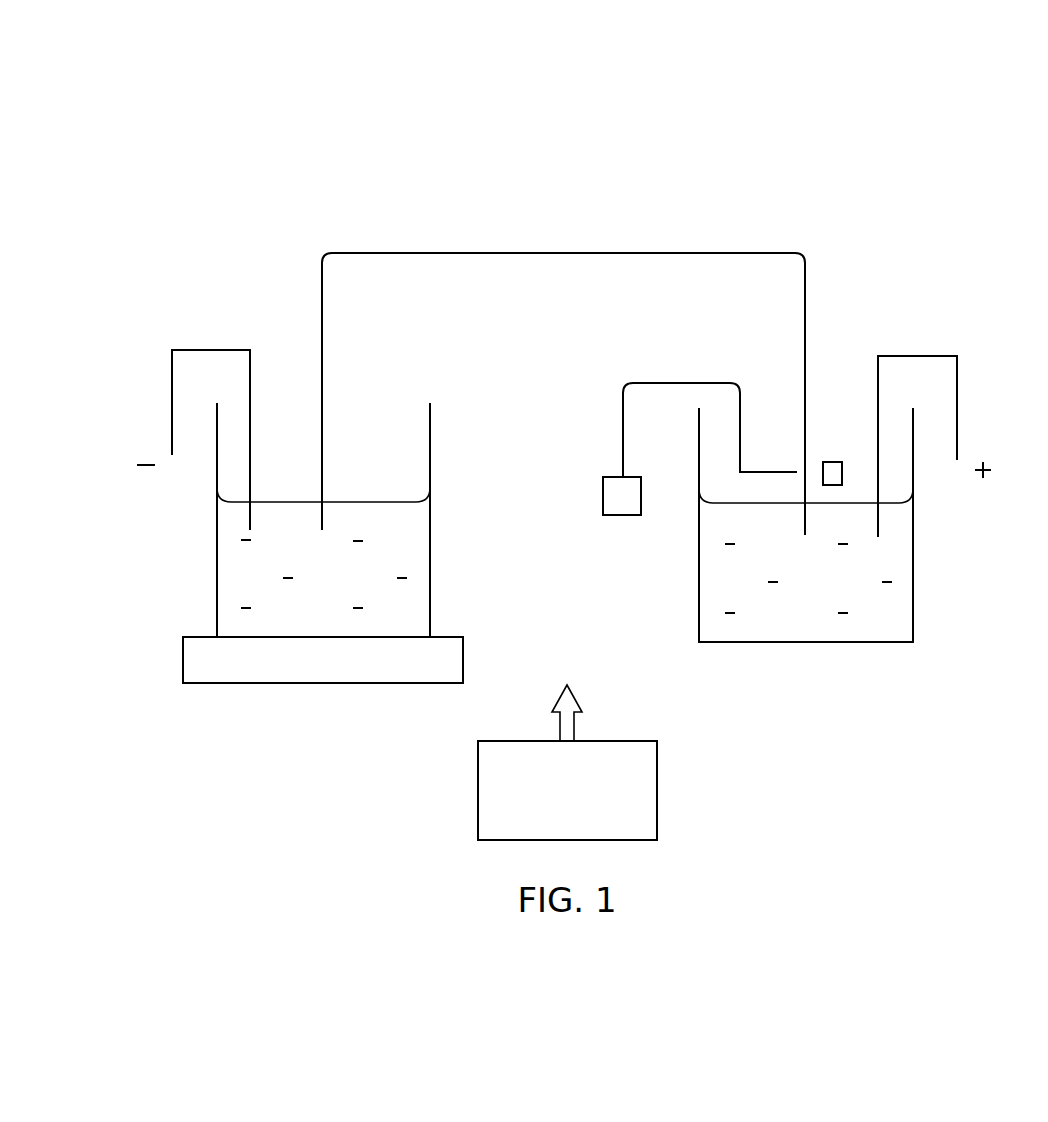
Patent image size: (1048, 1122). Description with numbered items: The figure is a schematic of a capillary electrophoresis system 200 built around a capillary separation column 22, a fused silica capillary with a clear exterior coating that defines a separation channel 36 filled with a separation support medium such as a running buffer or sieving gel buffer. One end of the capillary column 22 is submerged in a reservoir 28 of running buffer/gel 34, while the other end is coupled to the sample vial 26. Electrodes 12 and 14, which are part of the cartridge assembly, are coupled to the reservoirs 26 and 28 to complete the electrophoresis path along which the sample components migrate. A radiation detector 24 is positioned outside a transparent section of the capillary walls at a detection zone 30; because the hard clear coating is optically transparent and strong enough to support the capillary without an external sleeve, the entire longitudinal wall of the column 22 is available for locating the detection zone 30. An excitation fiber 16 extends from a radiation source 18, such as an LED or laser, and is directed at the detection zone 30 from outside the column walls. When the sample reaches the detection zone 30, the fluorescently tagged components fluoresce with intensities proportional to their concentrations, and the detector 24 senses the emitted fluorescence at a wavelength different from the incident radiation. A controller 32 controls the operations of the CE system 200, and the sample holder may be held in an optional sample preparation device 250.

The capillary electrophoresis system 200 is at (667, 210).
The electrode 12 is at (172, 366).
The electrode 14 is at (960, 388).
The excitation fiber 16 is at (623, 425).
The radiation source 18 is at (622, 517).
The capillary separation column 22 is at (423, 266).
The radiation detector 24 is at (833, 460).
The sample vial 26 is at (432, 543).
The reservoir 28 is at (913, 603).
The detection zone 30 is at (792, 459).
The controller 32 is at (555, 804).
The running buffer/gel 34 is at (333, 616).
The separation channel 36 is at (468, 253).
The sample preparation device 250 is at (303, 676).